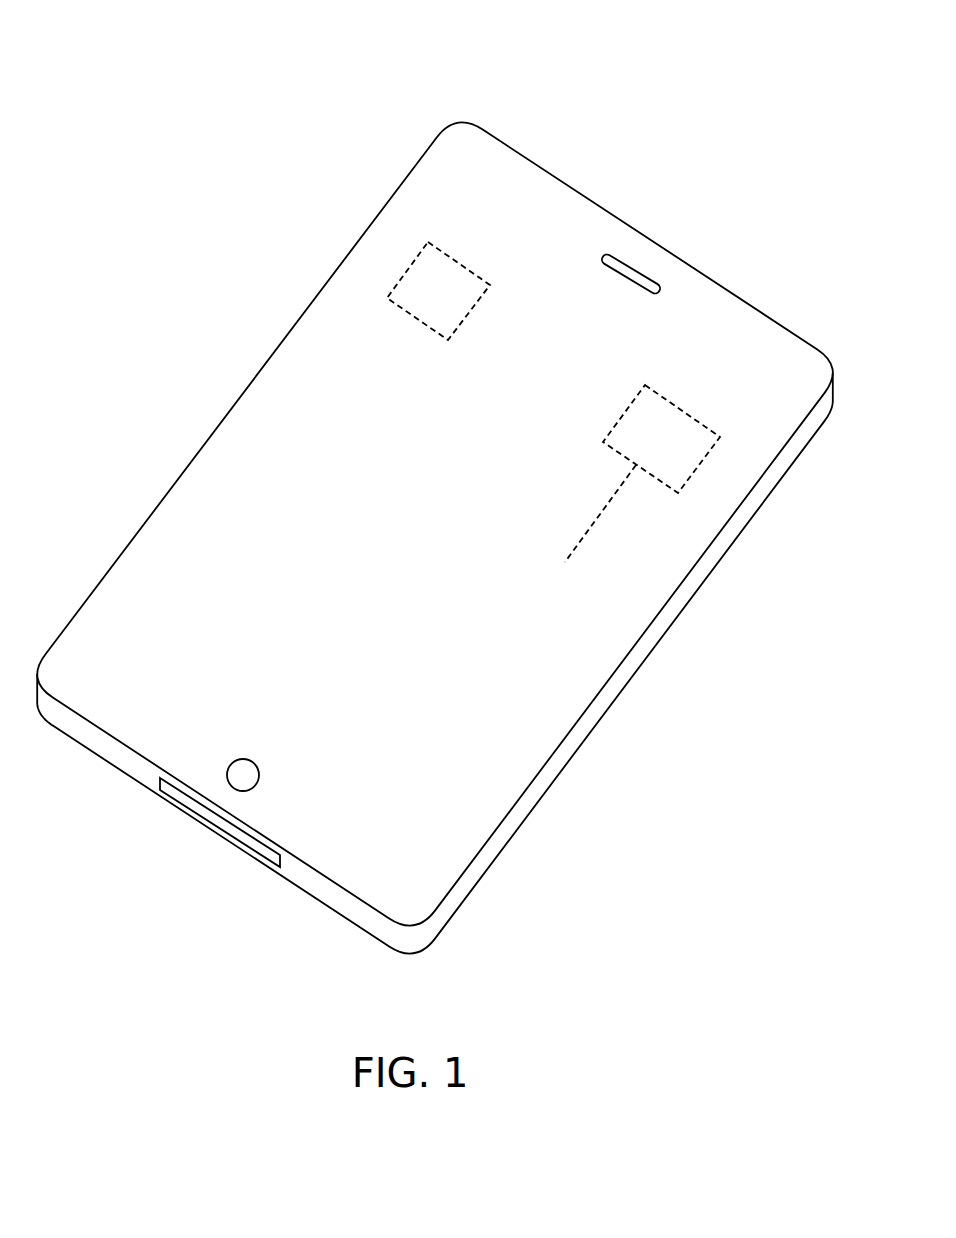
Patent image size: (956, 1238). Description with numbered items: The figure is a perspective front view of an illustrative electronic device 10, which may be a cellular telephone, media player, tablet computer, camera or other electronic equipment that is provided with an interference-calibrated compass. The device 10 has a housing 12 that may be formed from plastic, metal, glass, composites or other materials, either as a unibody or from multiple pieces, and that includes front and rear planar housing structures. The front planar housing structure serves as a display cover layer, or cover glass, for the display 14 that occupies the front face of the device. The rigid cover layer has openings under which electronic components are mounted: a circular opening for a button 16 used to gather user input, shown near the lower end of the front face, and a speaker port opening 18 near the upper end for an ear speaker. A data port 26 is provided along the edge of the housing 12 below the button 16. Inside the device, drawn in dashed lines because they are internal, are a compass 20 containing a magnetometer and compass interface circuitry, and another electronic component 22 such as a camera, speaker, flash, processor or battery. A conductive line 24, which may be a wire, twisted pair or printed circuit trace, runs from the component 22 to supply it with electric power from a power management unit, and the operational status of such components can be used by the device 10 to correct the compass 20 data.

The electronic device 10 is at (440, 70).
The housing 12 is at (543, 780).
The display 14 is at (543, 684).
The button 16 is at (232, 787).
The speaker port opening 18 is at (632, 263).
The compass 20 is at (430, 282).
The component 22 is at (678, 453).
The conductive line 24 is at (618, 495).
The port 26 is at (267, 856).